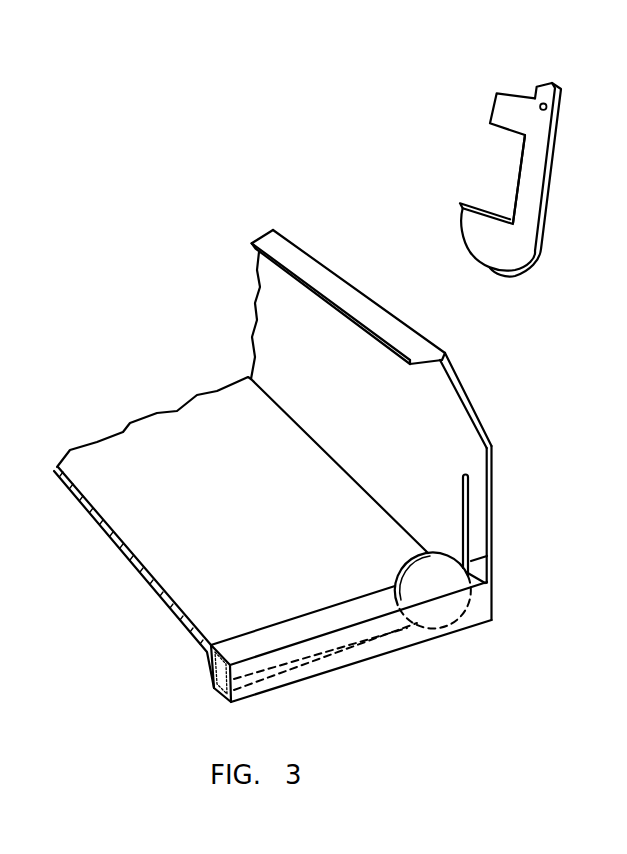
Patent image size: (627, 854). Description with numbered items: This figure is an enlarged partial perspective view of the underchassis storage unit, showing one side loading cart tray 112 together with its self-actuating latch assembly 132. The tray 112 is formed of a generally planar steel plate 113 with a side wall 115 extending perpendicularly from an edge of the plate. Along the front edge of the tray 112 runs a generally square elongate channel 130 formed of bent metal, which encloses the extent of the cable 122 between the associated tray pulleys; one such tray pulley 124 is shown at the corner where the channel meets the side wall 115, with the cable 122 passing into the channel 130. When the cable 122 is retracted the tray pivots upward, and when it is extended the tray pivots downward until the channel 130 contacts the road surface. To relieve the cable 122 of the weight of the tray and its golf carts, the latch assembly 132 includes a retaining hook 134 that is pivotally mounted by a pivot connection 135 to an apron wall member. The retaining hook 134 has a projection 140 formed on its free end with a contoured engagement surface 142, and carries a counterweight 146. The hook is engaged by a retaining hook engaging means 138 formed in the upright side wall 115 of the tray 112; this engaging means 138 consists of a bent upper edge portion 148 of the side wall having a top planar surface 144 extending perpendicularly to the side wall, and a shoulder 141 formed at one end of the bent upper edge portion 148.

The side loading cart tray 112 is at (137, 612).
The steel plate 113 is at (127, 499).
The side wall 115 is at (287, 314).
The cable 122 is at (467, 522).
The tray pulley 124 is at (440, 612).
The elongate channel 130 is at (358, 656).
The self-actuating latch assembly 132 is at (474, 153).
The retaining hook 134 is at (517, 243).
The pivot connection 135 is at (548, 109).
The retaining hook engaging means 138 is at (437, 326).
The projection 140 is at (478, 207).
The shoulder 141 is at (427, 366).
The contoured engagement surface 142 is at (473, 256).
The top planar surface 144 is at (303, 252).
The counterweight 146 is at (512, 112).
The bent upper edge portion 148 is at (446, 353).